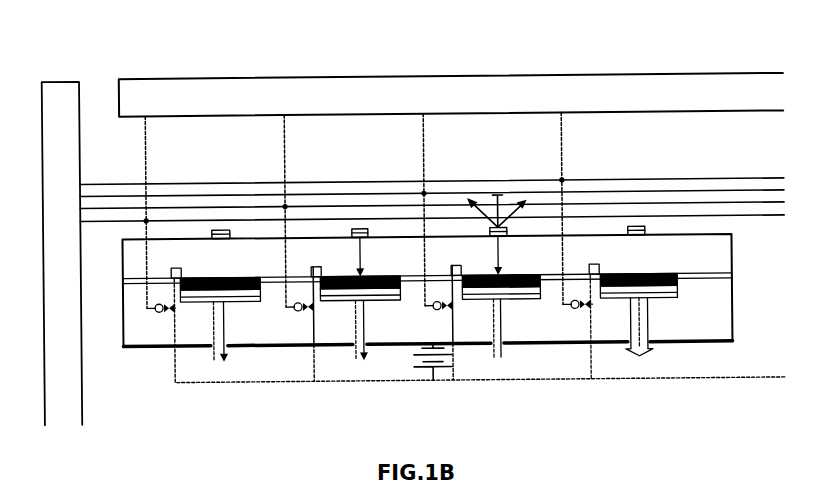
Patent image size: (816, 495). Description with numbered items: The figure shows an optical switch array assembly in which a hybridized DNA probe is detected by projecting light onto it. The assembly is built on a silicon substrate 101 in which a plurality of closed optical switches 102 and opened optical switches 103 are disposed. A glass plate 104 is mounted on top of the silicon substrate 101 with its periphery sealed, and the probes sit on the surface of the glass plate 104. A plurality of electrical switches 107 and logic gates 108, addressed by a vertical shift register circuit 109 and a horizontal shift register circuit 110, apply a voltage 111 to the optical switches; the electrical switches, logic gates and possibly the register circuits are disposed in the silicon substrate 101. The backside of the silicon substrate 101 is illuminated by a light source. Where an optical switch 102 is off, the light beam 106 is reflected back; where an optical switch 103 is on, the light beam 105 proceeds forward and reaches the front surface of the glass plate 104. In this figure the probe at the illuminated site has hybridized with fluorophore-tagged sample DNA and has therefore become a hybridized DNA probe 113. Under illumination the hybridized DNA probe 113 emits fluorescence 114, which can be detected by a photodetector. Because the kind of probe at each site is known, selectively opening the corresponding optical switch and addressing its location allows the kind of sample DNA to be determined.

The silicon substrate 101 is at (262, 319).
The closed optical switch 102 is at (503, 272).
The opened optical switch 103 is at (355, 269).
The glass plate 104 is at (665, 246).
The light beam 105 is at (367, 270).
The light beam 106 is at (222, 366).
The electrical switch 107 is at (597, 300).
The logic gate 108 is at (570, 310).
The vertical shift register circuit 109 is at (224, 93).
The horizontal shift register circuit 110 is at (62, 135).
The voltage 111 is at (413, 360).
The hybridized DNA probe 113 is at (366, 228).
The fluorescence 114 is at (488, 195).